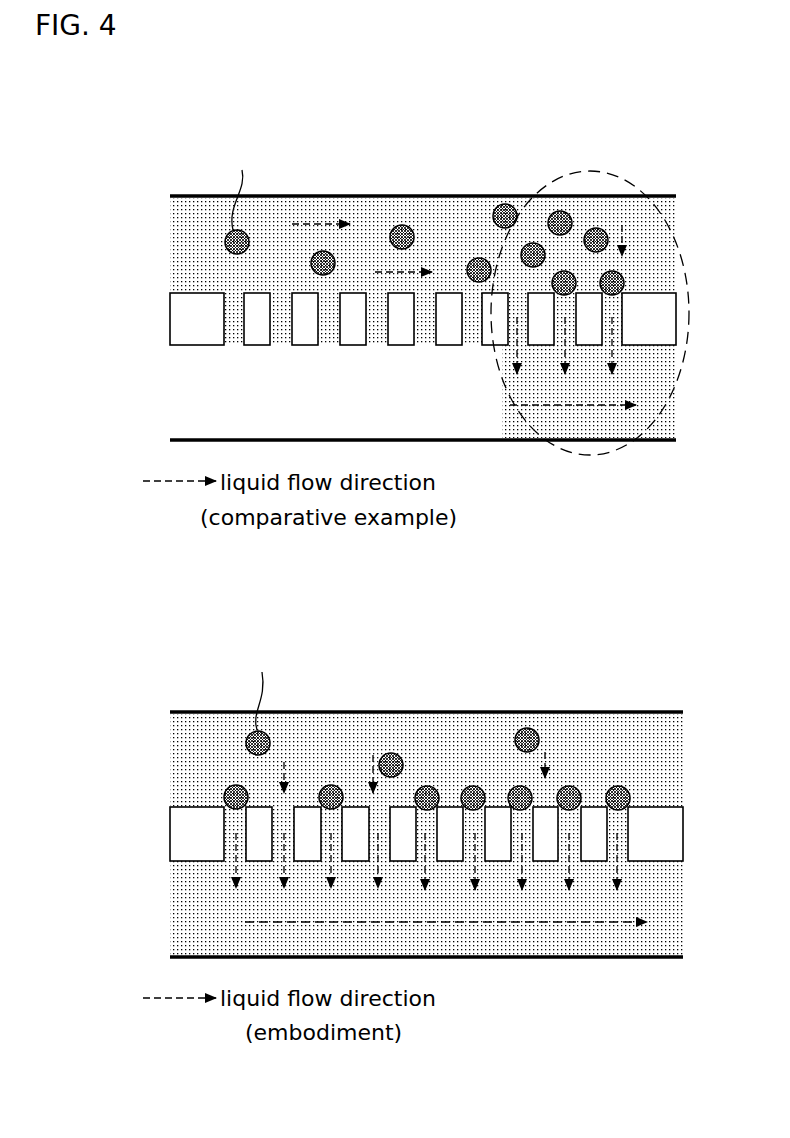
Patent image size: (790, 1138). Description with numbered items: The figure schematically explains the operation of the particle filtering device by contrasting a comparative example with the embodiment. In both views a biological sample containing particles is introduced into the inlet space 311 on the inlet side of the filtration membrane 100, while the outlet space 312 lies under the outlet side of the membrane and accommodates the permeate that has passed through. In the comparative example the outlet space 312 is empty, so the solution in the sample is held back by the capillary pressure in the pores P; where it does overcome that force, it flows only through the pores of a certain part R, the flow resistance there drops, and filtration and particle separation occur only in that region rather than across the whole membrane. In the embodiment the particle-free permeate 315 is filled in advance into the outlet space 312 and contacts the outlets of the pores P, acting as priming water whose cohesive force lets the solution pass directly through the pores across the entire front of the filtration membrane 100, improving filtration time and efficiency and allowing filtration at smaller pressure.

The filtration membrane 100 is at (170, 327).
The inlet space 311 is at (277, 228).
The outlet space 312 is at (459, 390).
The permeate 315 is at (436, 943).
The pores P is at (236, 318).
The certain part R is at (590, 298).